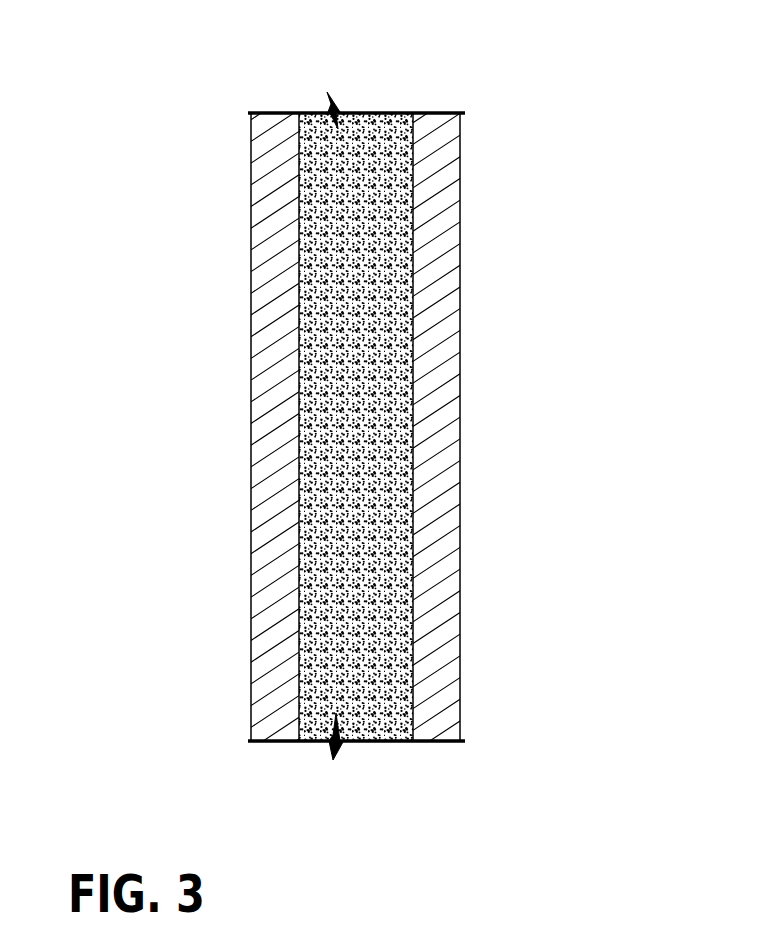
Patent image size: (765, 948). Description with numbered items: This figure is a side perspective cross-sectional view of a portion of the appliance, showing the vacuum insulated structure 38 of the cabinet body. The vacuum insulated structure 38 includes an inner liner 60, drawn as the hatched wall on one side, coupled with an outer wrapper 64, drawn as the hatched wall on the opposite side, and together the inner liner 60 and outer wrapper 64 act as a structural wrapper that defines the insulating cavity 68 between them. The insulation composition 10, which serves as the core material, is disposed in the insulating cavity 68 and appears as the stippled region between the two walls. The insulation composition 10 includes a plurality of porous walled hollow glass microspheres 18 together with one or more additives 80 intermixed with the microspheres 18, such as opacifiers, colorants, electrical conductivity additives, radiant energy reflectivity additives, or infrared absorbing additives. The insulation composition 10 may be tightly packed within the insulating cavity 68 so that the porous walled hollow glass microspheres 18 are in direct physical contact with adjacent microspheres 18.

The insulation composition 10 is at (400, 102).
The vacuum insulated structure 38 is at (515, 113).
The porous walled hollow glass microspheres 18 is at (337, 175).
The inner liner 60 is at (250, 185).
The outer wrapper 64 is at (460, 292).
The insulating cavity 68 is at (298, 463).
The additives 80 is at (375, 403).